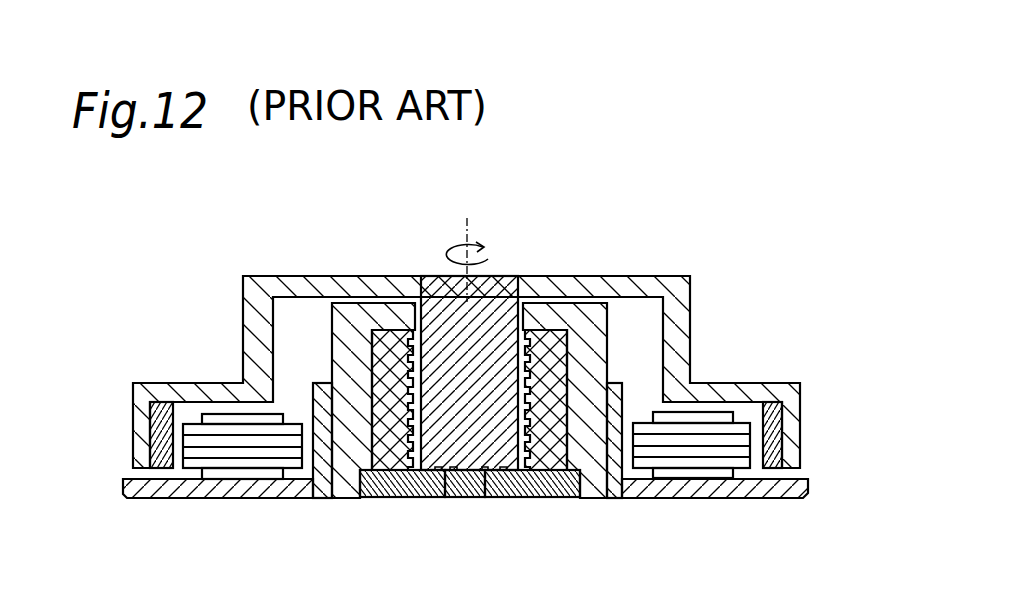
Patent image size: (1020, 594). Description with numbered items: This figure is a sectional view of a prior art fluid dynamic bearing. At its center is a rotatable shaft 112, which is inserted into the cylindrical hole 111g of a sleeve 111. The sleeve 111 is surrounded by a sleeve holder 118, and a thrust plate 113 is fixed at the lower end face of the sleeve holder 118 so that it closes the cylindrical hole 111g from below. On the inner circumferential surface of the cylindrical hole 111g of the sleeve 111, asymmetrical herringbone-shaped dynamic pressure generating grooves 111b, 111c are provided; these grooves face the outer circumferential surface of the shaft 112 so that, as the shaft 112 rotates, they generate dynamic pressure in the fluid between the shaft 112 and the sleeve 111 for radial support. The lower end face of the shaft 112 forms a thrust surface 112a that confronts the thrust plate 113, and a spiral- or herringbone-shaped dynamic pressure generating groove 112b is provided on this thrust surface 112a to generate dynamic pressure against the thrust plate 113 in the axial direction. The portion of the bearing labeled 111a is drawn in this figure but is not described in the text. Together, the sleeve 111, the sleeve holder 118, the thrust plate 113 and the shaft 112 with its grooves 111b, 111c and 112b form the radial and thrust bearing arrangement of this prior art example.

The sleeve 111 is at (565, 328).
The bearing holder 111a is at (372, 368).
The dynamic pressure generating groove 111b is at (340, 455).
The dynamic pressure generating groove 111c is at (372, 456).
The cylindrical hole 111g is at (553, 348).
The shaft 112 is at (496, 297).
The thrust surface 112a is at (447, 490).
The dynamic pressure generating groove 112b is at (487, 490).
The thrust plate 113 is at (388, 487).
The sleeve holder 118 is at (582, 480).